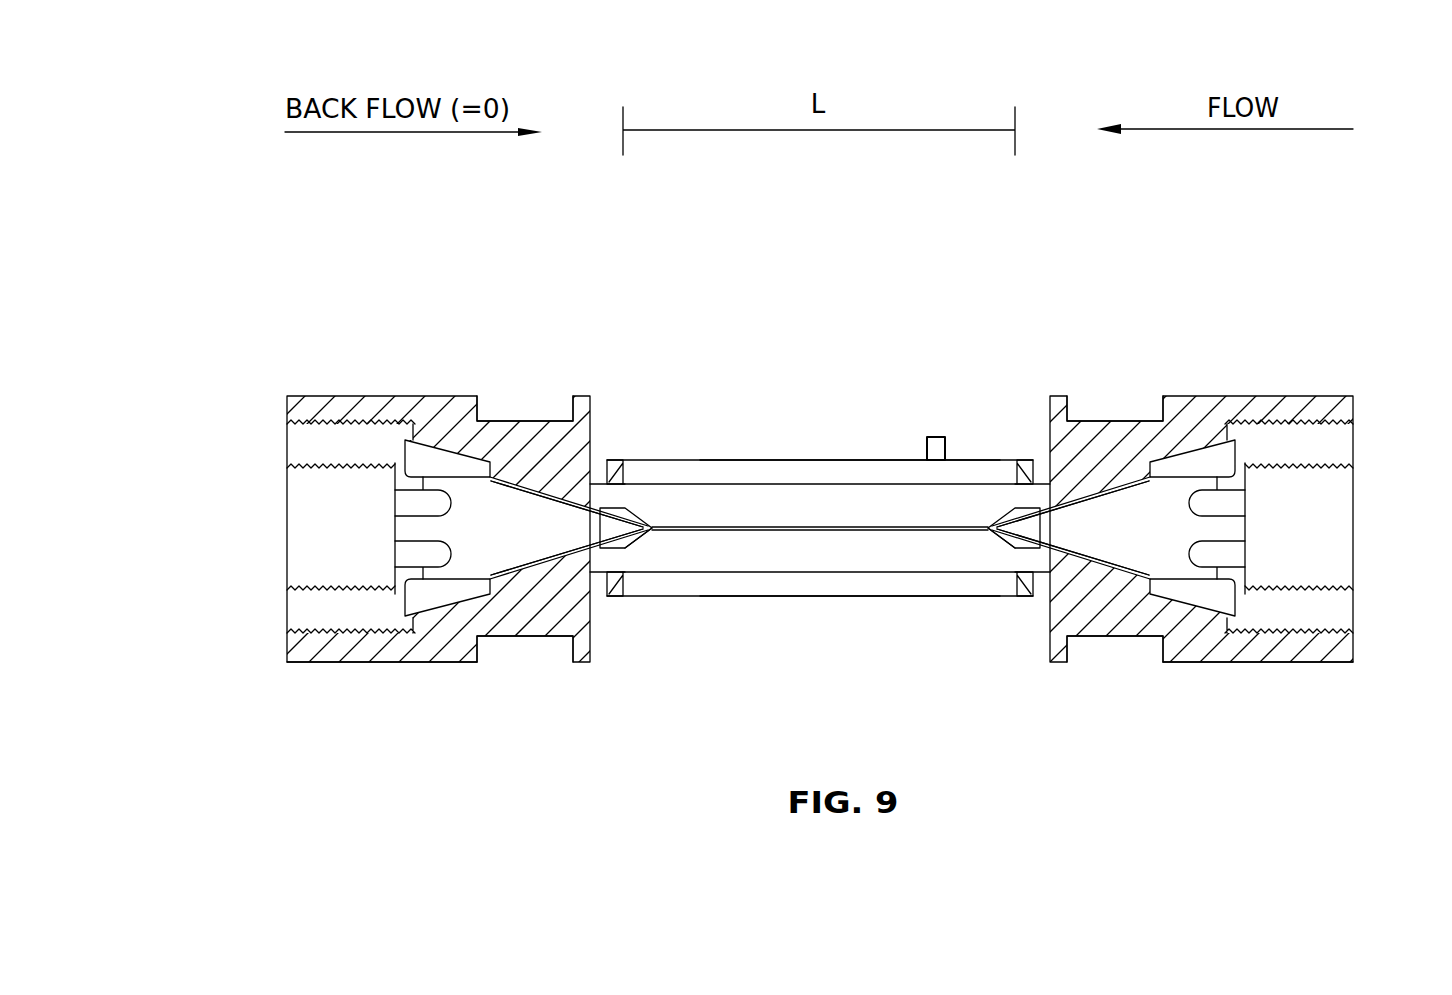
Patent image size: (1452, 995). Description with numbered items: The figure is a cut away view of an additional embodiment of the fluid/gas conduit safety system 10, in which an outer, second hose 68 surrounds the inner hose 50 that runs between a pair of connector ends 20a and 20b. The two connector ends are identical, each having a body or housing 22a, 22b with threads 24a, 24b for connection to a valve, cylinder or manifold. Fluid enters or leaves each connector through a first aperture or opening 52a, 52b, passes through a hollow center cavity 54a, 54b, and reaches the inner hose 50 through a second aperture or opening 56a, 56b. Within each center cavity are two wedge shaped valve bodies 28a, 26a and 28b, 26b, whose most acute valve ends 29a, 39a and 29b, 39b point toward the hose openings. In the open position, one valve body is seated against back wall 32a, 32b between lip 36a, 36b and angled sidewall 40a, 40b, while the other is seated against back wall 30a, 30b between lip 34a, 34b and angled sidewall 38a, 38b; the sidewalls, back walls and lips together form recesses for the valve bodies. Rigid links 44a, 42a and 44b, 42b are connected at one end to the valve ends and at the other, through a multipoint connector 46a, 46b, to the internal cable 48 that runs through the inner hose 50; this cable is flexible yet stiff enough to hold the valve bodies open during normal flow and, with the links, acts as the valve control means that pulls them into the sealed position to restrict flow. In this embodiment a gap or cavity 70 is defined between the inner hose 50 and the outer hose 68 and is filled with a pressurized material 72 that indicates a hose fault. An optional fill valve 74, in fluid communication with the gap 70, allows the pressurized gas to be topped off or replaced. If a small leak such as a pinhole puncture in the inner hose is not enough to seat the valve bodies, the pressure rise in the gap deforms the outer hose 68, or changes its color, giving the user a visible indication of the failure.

The fluid/gas conduit safety system 10 is at (250, 312).
The connector end 20a is at (1097, 539).
The connector end 20b is at (290, 662).
The body or housing 22a is at (1267, 721).
The body or housing 22b is at (333, 663).
The threads 24a is at (1346, 611).
The threads 24b is at (310, 593).
The wedge shaped valve body 26a is at (1281, 702).
The wedge shaped valve body 26b is at (410, 648).
The wedge shaped valve body 28a is at (1143, 390).
The wedge shaped valve body 28b is at (442, 447).
The valve end 29a is at (1077, 405).
The valve end 29b is at (492, 475).
The back wall 30a is at (1225, 652).
The back wall 30b is at (403, 612).
The back wall 32a is at (1295, 448).
The back wall 32b is at (405, 445).
The lip 34a is at (1315, 565).
The lip 34b is at (417, 540).
The lip 36a is at (1315, 493).
The lip 36b is at (417, 518).
The angled sidewall 38a is at (1094, 629).
The angled sidewall 38b is at (444, 607).
The valve end 39a is at (1115, 680).
The valve end 39b is at (497, 590).
The angled sidewall 40a is at (1227, 440).
The angled sidewall 40b is at (413, 440).
The link 42a is at (1015, 617).
The link 42b is at (597, 552).
The link 44a is at (1022, 467).
The link 44b is at (593, 488).
The multipoint connector 46a is at (991, 582).
The multipoint connector 46b is at (645, 542).
The internal cable 48 is at (850, 532).
The fluid/gas conduit or hose 50 is at (918, 597).
The first aperture or opening 52a is at (1348, 528).
The first aperture or opening 52b is at (287, 527).
The center cavity 54a is at (1073, 454).
The center cavity 54b is at (510, 527).
The second aperture or opening 56a is at (1002, 491).
The second aperture or opening 56b is at (612, 498).
The outer, second hose 68 is at (857, 458).
The gap or space (cavity) 70 is at (725, 466).
The material 72 is at (785, 478).
The fill valve 74 is at (930, 435).